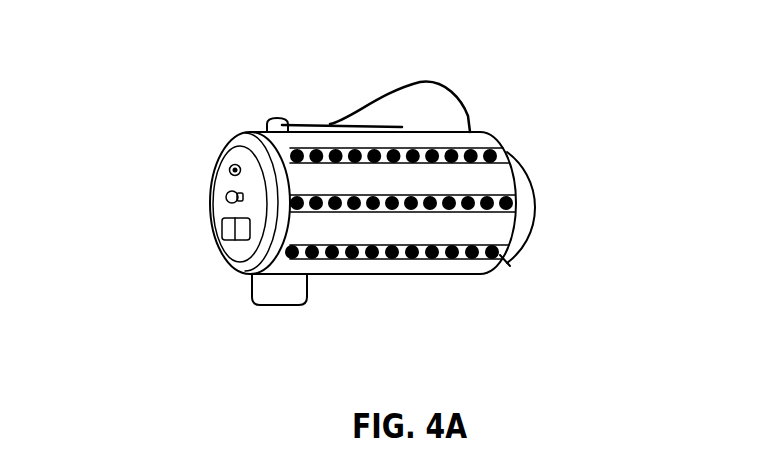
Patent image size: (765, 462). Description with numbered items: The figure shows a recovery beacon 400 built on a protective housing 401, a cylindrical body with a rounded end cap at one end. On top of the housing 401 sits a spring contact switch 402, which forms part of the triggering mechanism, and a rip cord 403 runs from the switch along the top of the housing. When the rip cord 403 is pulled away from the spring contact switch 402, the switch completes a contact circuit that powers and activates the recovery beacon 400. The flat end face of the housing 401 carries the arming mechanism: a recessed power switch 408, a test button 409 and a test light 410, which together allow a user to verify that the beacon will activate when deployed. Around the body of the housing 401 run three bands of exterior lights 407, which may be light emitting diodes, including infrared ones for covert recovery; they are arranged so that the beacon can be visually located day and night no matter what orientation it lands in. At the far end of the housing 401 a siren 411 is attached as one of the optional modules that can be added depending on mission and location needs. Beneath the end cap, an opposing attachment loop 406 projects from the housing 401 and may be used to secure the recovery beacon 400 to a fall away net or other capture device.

The recovery beacon 400 is at (485, 48).
The protective housing 401 is at (500, 183).
The spring contact switch 402 is at (266, 122).
The rip cord 403 is at (473, 120).
The opposing attachment loop 406 is at (254, 290).
The exterior lights 407 is at (505, 262).
The recessed power switch 408 is at (222, 230).
The test button 409 is at (226, 197).
The test light 410 is at (230, 170).
The siren 411 is at (523, 235).